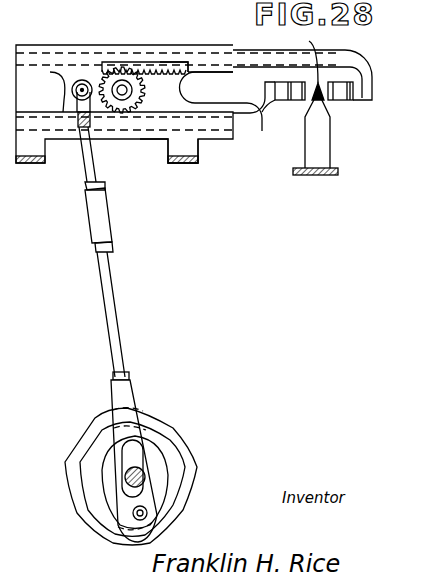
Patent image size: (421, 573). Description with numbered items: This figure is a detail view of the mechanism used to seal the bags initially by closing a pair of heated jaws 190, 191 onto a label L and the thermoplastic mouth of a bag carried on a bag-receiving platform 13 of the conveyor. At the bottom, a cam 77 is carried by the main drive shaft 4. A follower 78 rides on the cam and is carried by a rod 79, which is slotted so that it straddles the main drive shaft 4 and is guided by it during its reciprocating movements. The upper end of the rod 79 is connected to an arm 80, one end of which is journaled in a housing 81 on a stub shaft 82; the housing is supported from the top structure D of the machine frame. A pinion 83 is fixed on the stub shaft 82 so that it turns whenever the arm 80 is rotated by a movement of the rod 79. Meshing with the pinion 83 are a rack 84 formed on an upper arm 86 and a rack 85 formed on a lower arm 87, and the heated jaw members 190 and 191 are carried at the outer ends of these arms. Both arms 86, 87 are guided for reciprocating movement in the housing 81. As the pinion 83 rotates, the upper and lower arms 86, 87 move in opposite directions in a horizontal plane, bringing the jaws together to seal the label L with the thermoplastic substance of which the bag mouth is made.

The housing 81 is at (47, 57).
The arm 80 is at (92, 82).
The pinion 83 is at (125, 63).
The rack 84 is at (182, 63).
The stub shaft 82 is at (122, 92).
The rack 85 is at (152, 114).
The lower arm 87 is at (244, 128).
The upper arm 86 is at (338, 58).
The label L is at (303, 57).
The jaw 191 is at (297, 100).
The jaw 190 is at (337, 103).
The bag-receiving platform 13 is at (322, 177).
The rod 79 is at (130, 395).
The cam 77 is at (197, 467).
The main drive shaft 4 is at (128, 477).
The follower 78 is at (137, 517).
The top structure D is at (32, 163).